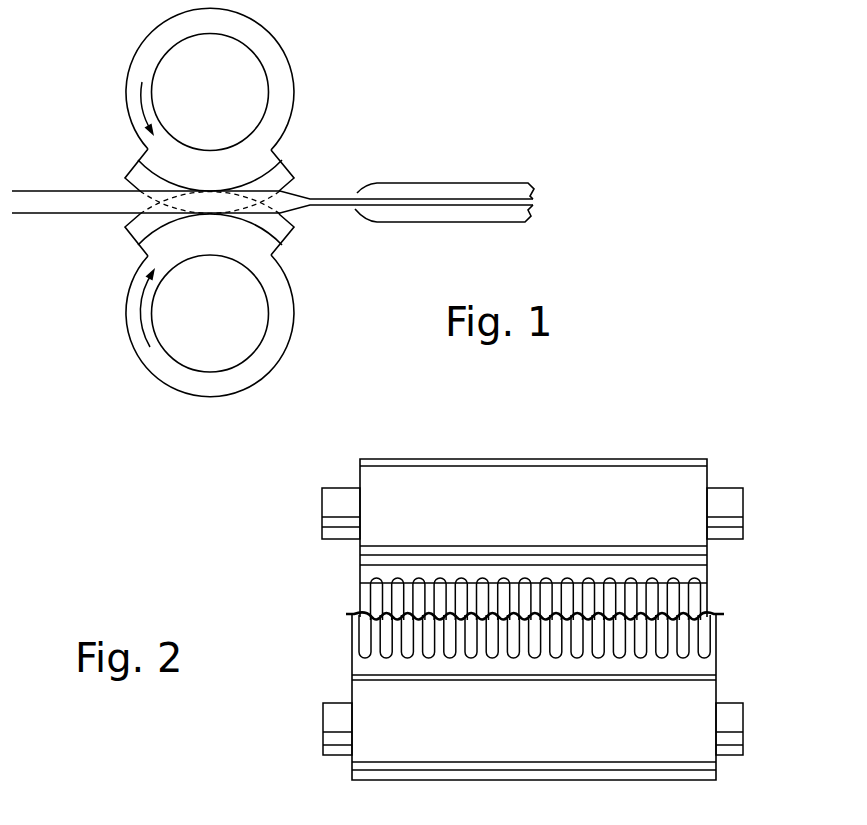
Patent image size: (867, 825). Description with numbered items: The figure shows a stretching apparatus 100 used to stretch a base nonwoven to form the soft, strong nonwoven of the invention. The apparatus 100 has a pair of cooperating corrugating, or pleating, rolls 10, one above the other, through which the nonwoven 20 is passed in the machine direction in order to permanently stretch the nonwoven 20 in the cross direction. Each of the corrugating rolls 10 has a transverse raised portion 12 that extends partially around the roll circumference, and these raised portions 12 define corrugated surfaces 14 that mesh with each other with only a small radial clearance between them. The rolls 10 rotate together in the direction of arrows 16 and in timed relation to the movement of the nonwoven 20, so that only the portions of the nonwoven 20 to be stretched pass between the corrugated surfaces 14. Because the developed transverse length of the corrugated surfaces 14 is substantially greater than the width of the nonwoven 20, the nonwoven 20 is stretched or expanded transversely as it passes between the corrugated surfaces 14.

In FIG. 1, the corrugating rolls 10 is at (277, 82).
In FIG. 2, the corrugating rolls 10 is at (590, 459).
In FIG. 1, the transverse raised portion 12 is at (258, 163).
In FIG. 2, the corrugated surfaces 14 is at (568, 582).
In FIG. 1, the arrows 16 is at (140, 94).
In FIG. 1, the nonwoven 20 is at (338, 198).
In FIG. 2, the nonwoven 20 is at (330, 604).
In FIG. 1, the apparatus 100 is at (414, 106).